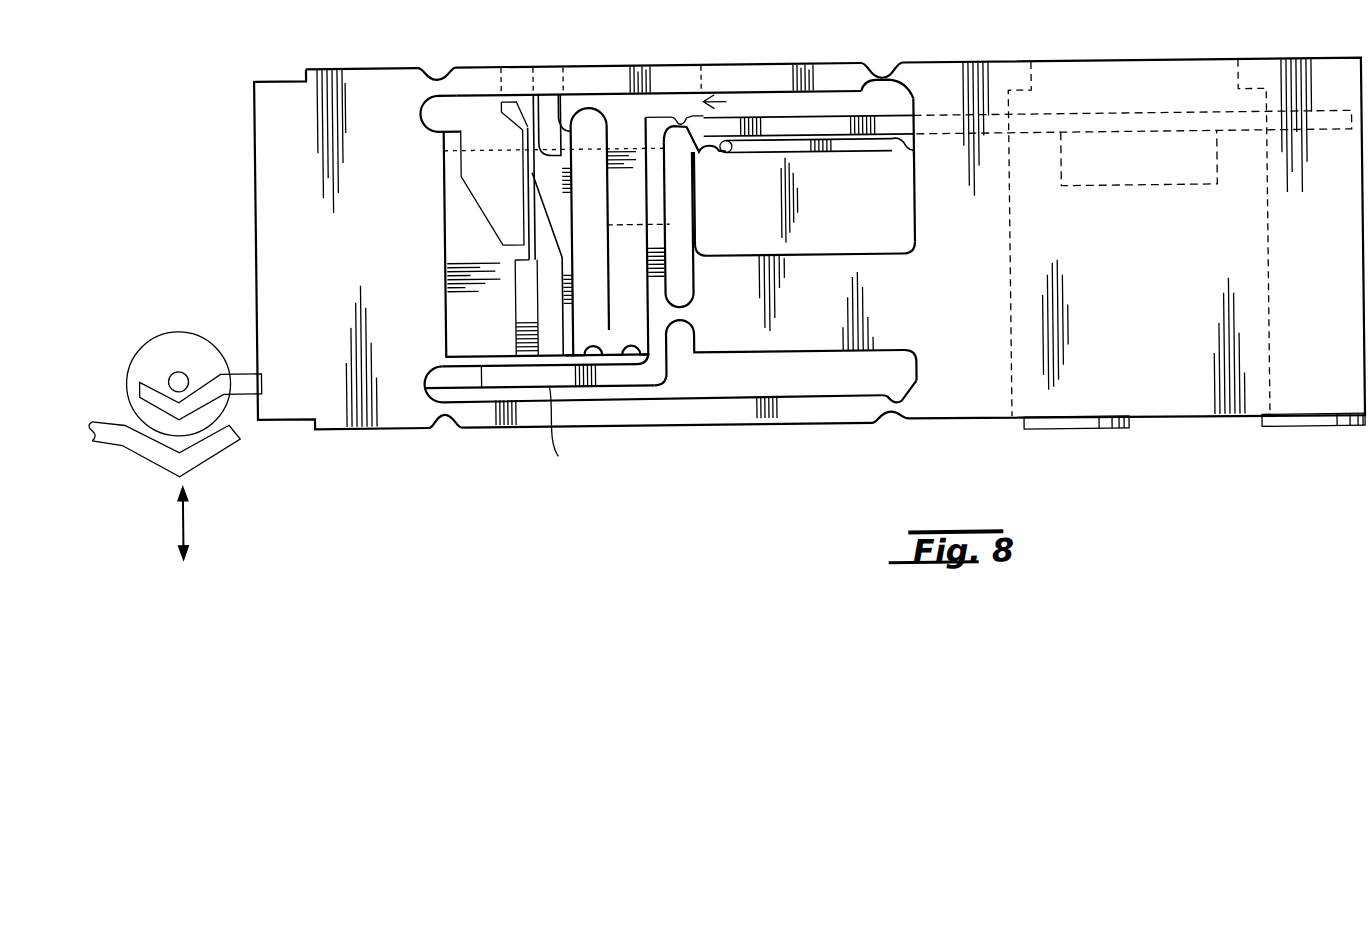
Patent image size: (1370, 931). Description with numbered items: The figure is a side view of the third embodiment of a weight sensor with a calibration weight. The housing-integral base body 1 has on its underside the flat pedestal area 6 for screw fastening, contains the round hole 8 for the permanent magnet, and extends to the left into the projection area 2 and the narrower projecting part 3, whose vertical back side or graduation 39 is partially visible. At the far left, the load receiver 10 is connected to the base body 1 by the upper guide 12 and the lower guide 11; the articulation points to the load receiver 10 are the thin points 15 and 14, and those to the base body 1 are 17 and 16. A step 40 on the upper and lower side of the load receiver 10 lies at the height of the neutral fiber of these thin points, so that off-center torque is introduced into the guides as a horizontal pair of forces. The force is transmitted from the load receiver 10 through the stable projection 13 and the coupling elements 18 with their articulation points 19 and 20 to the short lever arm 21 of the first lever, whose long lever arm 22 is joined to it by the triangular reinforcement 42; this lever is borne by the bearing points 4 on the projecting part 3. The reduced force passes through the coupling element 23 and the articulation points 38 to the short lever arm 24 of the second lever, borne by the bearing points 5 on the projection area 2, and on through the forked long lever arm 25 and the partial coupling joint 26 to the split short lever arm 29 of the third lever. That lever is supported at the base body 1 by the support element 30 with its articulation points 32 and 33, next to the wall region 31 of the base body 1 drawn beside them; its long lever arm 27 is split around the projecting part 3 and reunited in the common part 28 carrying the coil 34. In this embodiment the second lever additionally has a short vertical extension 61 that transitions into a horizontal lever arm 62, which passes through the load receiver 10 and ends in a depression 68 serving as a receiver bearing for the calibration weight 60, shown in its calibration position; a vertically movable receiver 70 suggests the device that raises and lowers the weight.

The base body 1 is at (1176, 404).
The projection area 2 is at (740, 350).
The projecting part 3 is at (602, 103).
The bearing points 4 is at (585, 108).
The bearing points 5 is at (692, 302).
The pedestal area 6 is at (1067, 434).
The round hole 8 is at (1014, 275).
The load receiver 10 is at (340, 426).
The lower guide 11 is at (818, 402).
The upper guide 12 is at (826, 80).
The projection 13 is at (466, 328).
The articulation point 14 is at (443, 420).
The articulation point 15 is at (440, 78).
The articulation point 16 is at (892, 418).
The articulation point 17 is at (886, 70).
The coupling elements 18 is at (527, 161).
The articulation point 19 is at (517, 236).
The articulation point 20 is at (520, 128).
The short lever arm 21 is at (524, 94).
The long lever arm 22 is at (575, 258).
The coupling element 23 is at (613, 352).
The short lever arm 24 is at (668, 348).
The long lever arm 25 is at (660, 204).
The partial coupling joint 26 is at (682, 125).
The long lever arm 27 is at (776, 125).
The common part 28 is at (1096, 120).
The short lever arm 29 is at (688, 160).
The support element 30 is at (805, 147).
The end wall 31 is at (913, 160).
The articulation point 32 is at (729, 154).
The articulation point 33 is at (896, 155).
The coil 34 is at (1192, 185).
The articulation points 38 is at (638, 347).
The graduation 39 is at (705, 98).
The step 40 is at (266, 78).
The triangular reinforcement 42 is at (513, 121).
The calibration weight 60 is at (161, 353).
The vertical extension 61 is at (660, 400).
The horizontal lever arm 62 is at (243, 329).
The depression 68 is at (170, 402).
The receiver 70 is at (205, 455).